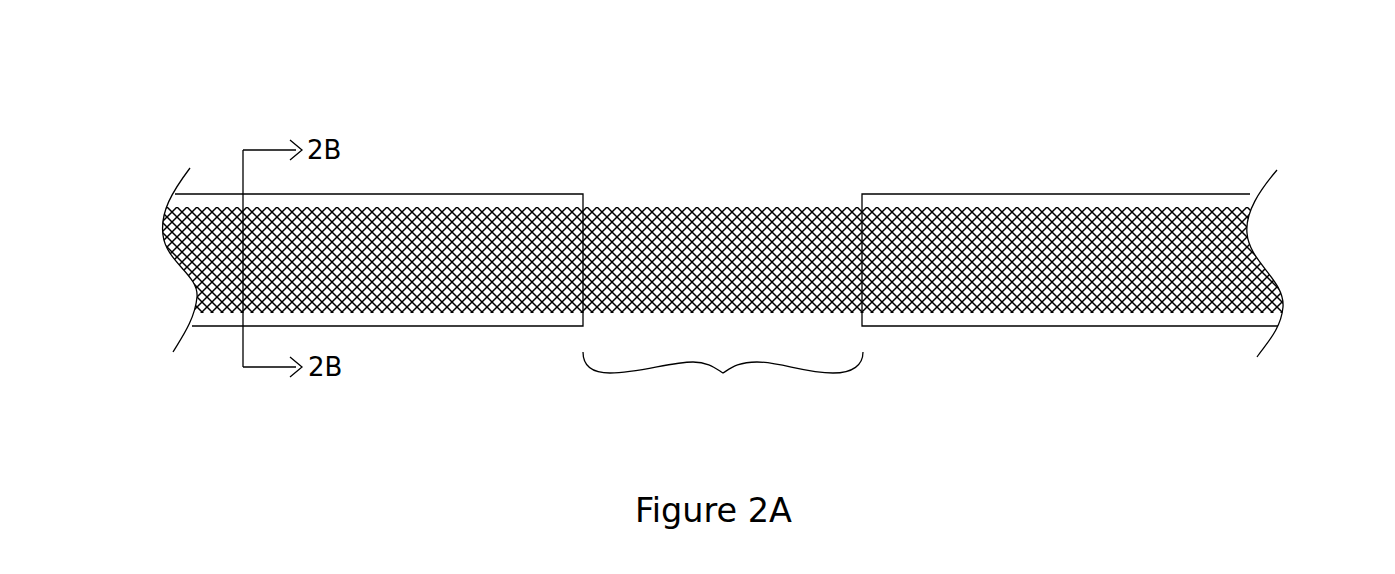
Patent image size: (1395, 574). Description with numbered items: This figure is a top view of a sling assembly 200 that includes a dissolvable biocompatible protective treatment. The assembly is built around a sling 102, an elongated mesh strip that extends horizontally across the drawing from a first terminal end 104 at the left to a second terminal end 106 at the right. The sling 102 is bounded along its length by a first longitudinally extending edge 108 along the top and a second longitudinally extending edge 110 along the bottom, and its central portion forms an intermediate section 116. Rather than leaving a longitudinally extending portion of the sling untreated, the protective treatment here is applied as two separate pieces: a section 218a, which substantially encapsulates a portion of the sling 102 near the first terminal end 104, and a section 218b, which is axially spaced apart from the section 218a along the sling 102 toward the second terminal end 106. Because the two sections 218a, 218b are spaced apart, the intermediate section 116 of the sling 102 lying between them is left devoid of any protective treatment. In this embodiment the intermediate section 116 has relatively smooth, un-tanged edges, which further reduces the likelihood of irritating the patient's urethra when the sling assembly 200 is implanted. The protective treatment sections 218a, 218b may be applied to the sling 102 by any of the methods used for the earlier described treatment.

The sling assembly 200 is at (722, 224).
The sling 102 is at (712, 162).
The first terminal end 104 is at (187, 270).
The second terminal end 106 is at (1247, 240).
The first longitudinally extending edge 108 is at (417, 193).
The second longitudinally extending edge 110 is at (417, 327).
The intermediate section 116 is at (723, 373).
The section of protective treatment 218a is at (516, 202).
The section of protective treatment 218b is at (1030, 202).